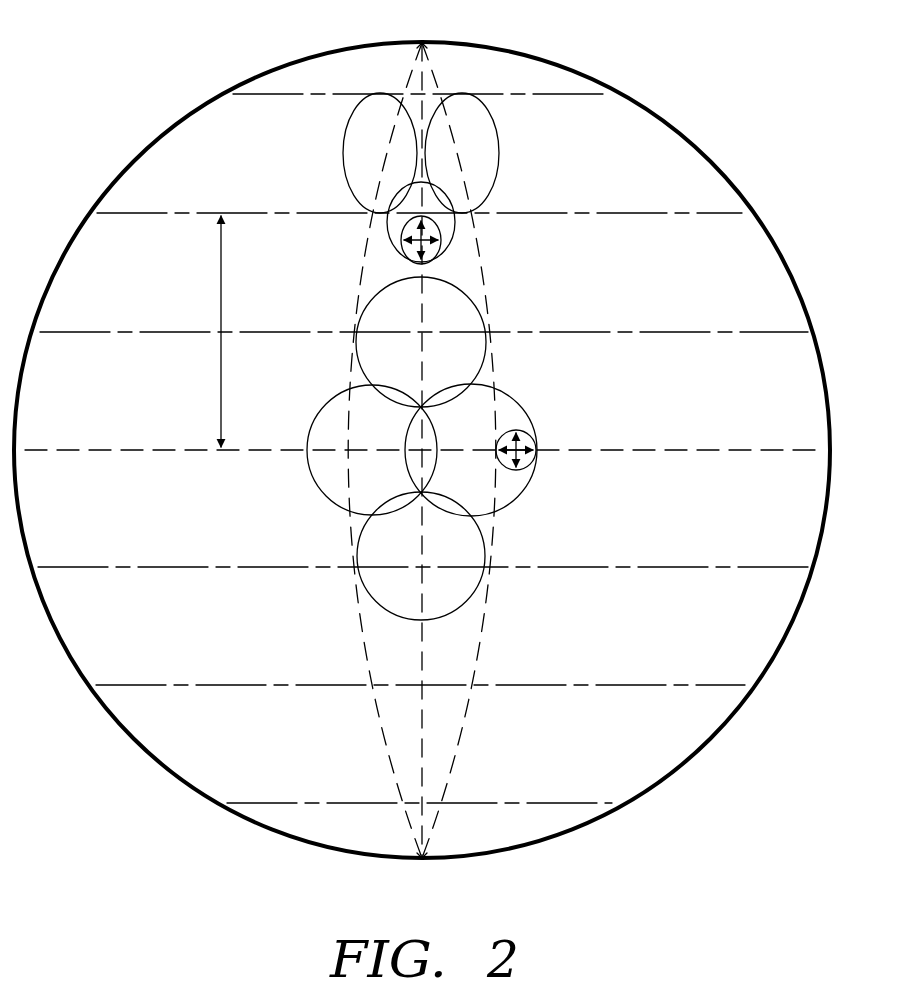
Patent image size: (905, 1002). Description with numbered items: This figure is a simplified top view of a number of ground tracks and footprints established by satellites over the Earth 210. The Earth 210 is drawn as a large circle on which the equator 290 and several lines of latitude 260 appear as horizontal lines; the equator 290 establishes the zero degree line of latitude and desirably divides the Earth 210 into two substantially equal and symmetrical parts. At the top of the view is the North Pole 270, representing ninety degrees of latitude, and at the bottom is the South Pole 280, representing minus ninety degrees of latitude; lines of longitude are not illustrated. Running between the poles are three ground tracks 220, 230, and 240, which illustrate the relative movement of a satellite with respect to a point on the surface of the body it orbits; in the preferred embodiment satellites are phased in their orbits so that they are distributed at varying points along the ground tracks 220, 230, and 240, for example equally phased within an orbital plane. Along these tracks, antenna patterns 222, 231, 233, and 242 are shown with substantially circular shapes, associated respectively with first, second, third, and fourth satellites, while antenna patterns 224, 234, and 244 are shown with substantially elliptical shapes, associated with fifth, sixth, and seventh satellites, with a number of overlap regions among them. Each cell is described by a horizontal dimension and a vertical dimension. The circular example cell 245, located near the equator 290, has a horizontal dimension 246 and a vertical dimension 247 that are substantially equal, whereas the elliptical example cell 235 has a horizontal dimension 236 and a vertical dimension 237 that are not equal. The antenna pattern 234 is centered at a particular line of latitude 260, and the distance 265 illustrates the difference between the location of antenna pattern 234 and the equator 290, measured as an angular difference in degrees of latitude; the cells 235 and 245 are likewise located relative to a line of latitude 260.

The Earth 210 is at (683, 133).
The ground track 220 is at (362, 632).
The antenna pattern 222 is at (331, 395).
The antenna pattern 224 is at (350, 125).
The ground track 230 is at (420, 640).
The antenna pattern 231 is at (366, 597).
The antenna pattern 233 is at (483, 298).
The antenna pattern 234 is at (456, 226).
The cell 235 is at (440, 252).
The horizontal dimension 236 is at (403, 250).
The vertical dimension 237 is at (394, 223).
The ground track 240 is at (483, 635).
The antenna pattern 242 is at (505, 393).
The antenna pattern 244 is at (497, 140).
The cell 245 is at (528, 434).
The horizontal dimension 246 is at (500, 440).
The vertical dimension 247 is at (528, 458).
The lines of latitude 260 is at (585, 95).
The distance 265 is at (220, 295).
The North Pole 270 is at (425, 43).
The South Pole 280 is at (422, 858).
The equator 290 is at (137, 452).